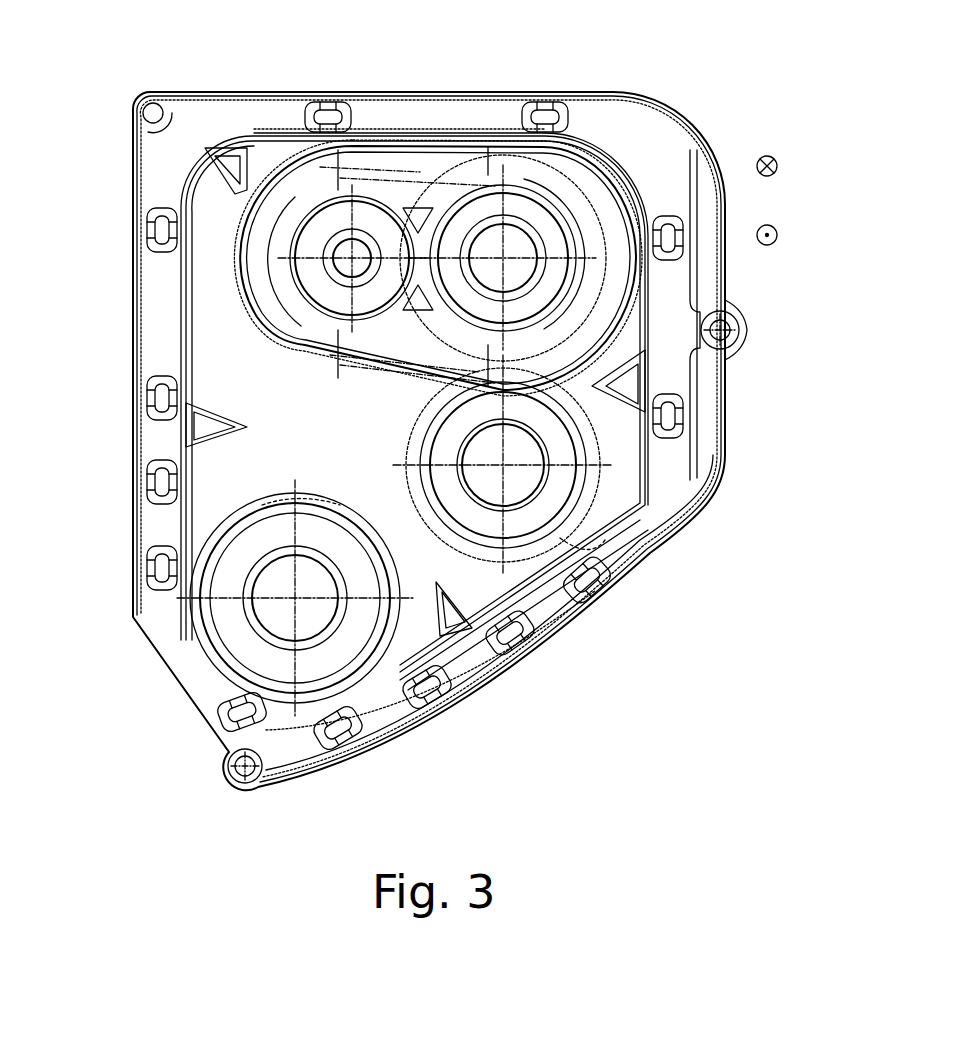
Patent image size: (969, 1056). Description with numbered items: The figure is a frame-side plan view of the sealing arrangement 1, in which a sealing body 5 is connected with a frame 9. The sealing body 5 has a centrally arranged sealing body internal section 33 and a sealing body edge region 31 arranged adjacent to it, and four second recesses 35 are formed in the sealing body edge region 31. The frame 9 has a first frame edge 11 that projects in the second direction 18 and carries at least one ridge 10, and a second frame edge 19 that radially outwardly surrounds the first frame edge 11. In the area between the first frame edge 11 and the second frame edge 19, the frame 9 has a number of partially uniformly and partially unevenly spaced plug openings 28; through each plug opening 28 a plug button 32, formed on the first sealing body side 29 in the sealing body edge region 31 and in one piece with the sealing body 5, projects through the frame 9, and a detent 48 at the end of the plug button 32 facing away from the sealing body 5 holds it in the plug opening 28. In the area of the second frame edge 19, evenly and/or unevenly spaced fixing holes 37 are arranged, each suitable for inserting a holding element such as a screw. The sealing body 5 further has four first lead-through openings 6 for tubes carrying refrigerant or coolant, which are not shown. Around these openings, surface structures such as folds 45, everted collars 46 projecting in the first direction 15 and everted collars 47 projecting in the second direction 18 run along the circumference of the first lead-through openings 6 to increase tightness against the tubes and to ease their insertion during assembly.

The sealing arrangement 1 is at (124, 80).
The sealing body 5 is at (200, 497).
The first lead-through openings 6 is at (355, 250).
The frame 9 is at (390, 718).
The ridge 10 is at (190, 430).
The first frame edge 11 is at (503, 250).
The first direction 15 is at (772, 248).
The second direction 18 is at (775, 155).
The second frame edge 19 is at (727, 442).
The plug openings 28 is at (352, 92).
The first sealing body side 29 is at (262, 505).
The sealing body edge region 31 is at (517, 580).
The plug button 32 is at (325, 110).
The sealing body internal section 33 is at (430, 648).
The second recesses 35 is at (232, 152).
The fixing holes 37 is at (145, 118).
The folds 45 is at (238, 745).
The everted collars 46 is at (540, 160).
The everted collars 47 is at (605, 540).
The detent 48 is at (600, 585).